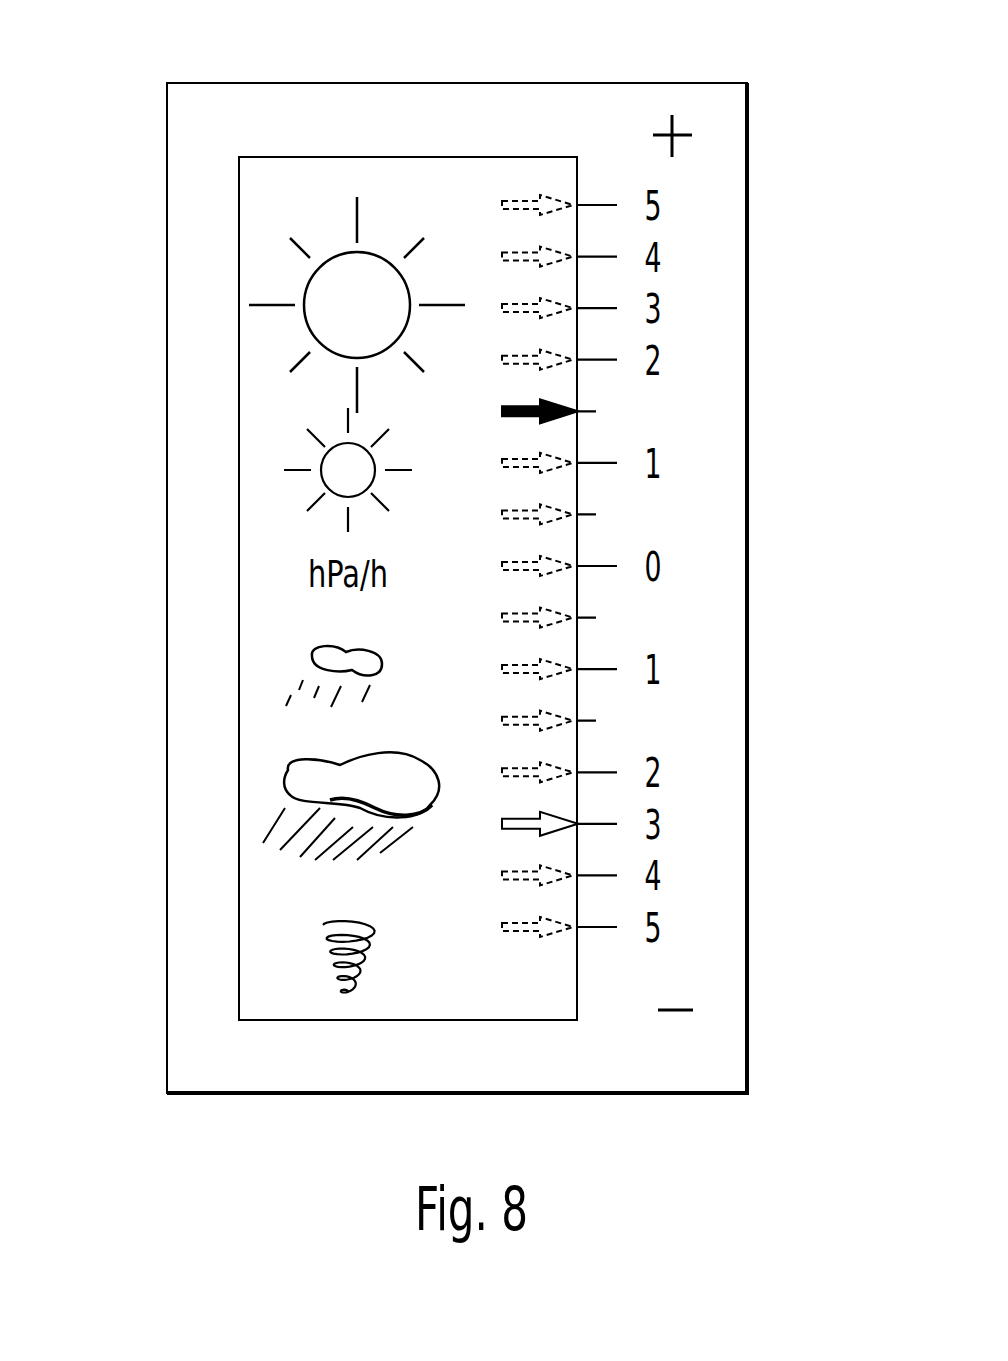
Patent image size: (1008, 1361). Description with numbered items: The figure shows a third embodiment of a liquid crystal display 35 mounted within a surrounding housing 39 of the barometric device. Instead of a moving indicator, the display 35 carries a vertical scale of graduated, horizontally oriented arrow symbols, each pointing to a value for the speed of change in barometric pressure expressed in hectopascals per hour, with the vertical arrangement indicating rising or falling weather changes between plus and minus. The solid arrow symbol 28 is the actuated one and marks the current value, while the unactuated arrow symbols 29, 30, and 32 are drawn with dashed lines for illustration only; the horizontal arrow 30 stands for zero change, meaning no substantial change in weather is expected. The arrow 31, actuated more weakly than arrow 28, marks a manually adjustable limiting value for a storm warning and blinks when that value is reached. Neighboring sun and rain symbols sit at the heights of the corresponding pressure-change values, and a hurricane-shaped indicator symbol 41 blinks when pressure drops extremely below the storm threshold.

The arrow symbol 28 is at (560, 404).
The unactuated arrow symbol 29 is at (557, 668).
The unactuated arrow 30 is at (555, 562).
The arrow 31 is at (557, 820).
The unactuated arrow symbol 32 is at (552, 927).
The display 35 is at (438, 157).
The housing 39 is at (697, 1061).
The indicator symbol 41 is at (330, 946).